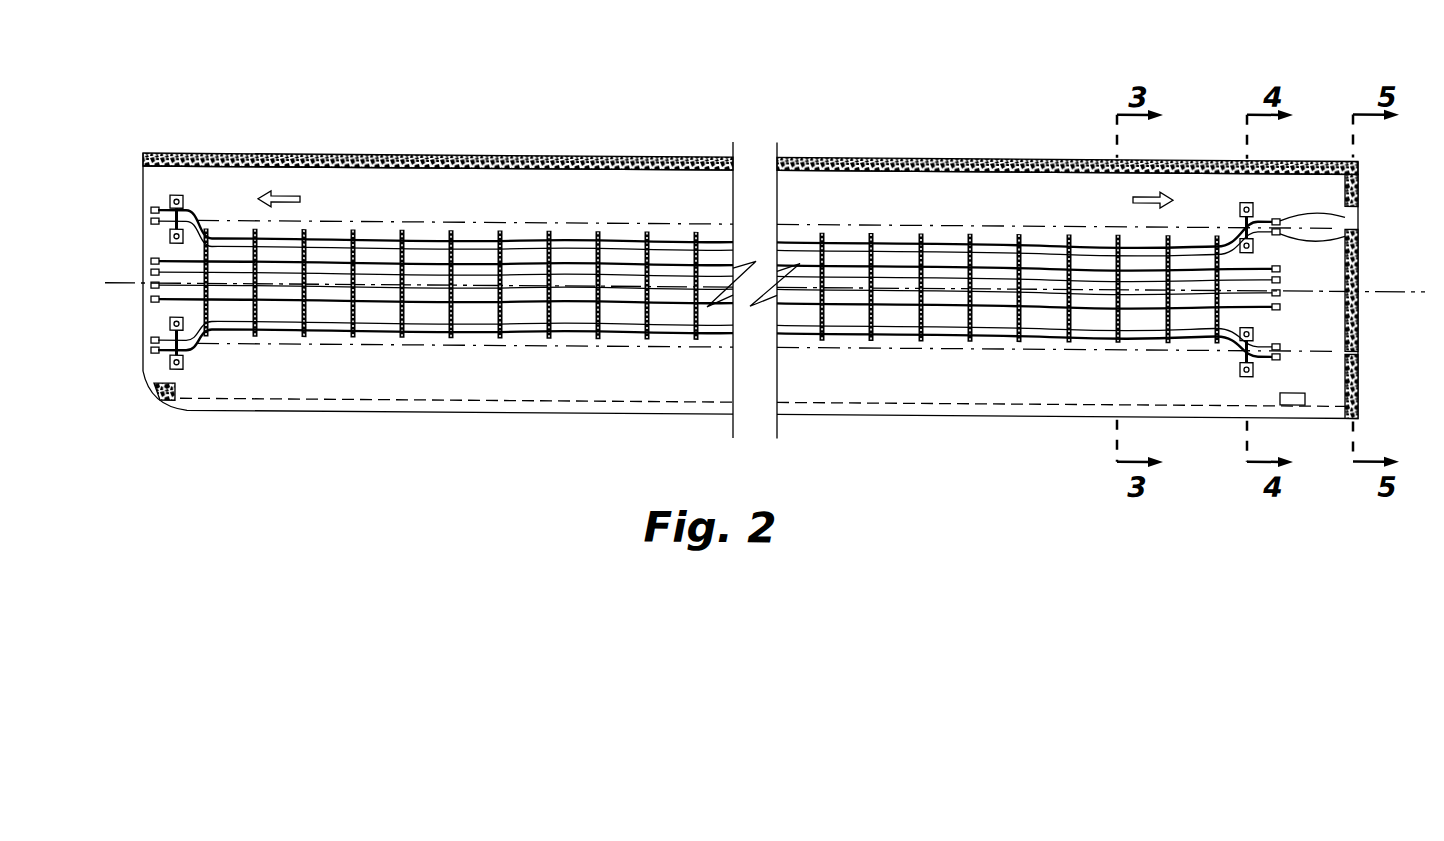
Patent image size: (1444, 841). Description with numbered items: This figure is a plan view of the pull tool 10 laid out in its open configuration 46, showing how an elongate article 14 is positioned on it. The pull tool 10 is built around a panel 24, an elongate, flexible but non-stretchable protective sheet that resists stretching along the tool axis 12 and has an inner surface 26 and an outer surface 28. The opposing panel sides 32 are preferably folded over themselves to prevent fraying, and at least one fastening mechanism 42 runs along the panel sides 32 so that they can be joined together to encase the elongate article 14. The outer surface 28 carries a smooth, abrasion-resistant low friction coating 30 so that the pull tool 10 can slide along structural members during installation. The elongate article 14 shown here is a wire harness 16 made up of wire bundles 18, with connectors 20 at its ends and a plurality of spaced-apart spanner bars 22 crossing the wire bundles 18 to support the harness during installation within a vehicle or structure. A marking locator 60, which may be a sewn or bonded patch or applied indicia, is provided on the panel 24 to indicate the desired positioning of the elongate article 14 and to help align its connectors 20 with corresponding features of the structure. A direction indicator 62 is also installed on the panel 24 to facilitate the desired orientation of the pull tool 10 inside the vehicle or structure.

The pull tool 10 is at (760, 272).
The open configuration 46 is at (434, 70).
The tool axis 12 is at (1396, 284).
The elongate article 14 is at (715, 172).
The wire harness 16 is at (472, 234).
The wire bundle 18 is at (715, 222).
The connector 20 is at (152, 220).
The spanner bar 22 is at (450, 336).
The panel 24 is at (906, 194).
The inner surface 26 is at (983, 381).
The outer surface 28 is at (910, 387).
The low friction coating 30 is at (600, 376).
The panel side 32 is at (372, 153).
The fastening mechanism 42 is at (800, 155).
The marking locator 60 is at (1300, 397).
The direction indicator 62 is at (246, 187).